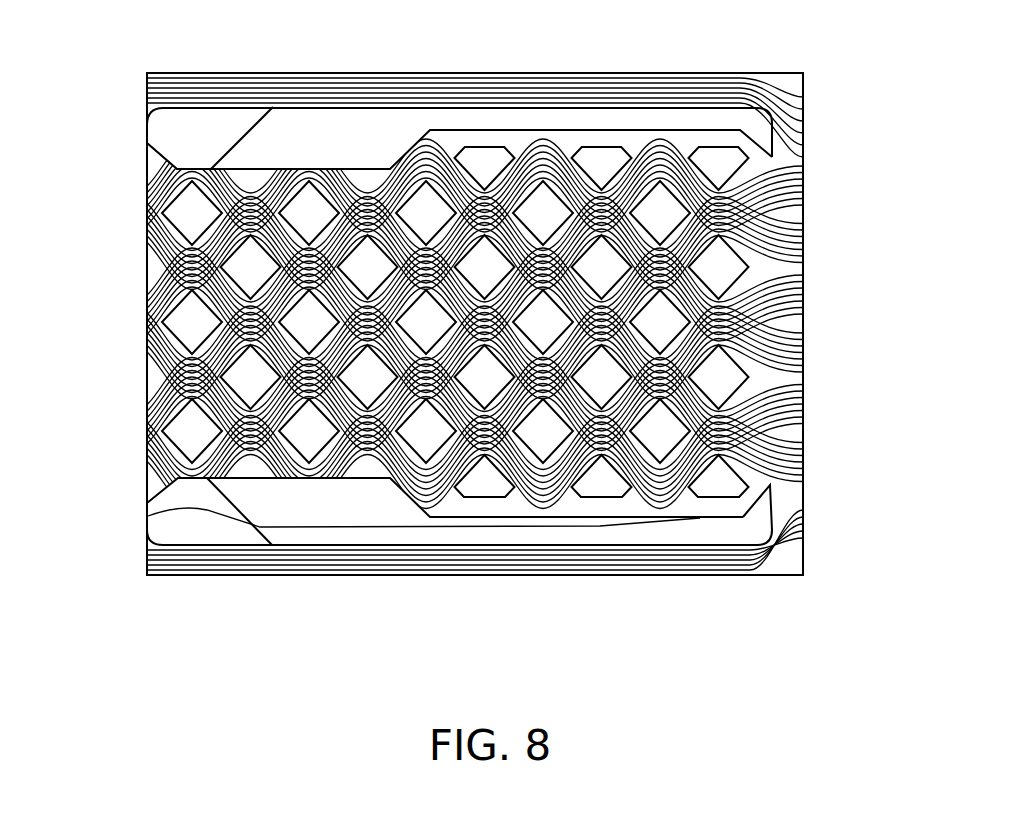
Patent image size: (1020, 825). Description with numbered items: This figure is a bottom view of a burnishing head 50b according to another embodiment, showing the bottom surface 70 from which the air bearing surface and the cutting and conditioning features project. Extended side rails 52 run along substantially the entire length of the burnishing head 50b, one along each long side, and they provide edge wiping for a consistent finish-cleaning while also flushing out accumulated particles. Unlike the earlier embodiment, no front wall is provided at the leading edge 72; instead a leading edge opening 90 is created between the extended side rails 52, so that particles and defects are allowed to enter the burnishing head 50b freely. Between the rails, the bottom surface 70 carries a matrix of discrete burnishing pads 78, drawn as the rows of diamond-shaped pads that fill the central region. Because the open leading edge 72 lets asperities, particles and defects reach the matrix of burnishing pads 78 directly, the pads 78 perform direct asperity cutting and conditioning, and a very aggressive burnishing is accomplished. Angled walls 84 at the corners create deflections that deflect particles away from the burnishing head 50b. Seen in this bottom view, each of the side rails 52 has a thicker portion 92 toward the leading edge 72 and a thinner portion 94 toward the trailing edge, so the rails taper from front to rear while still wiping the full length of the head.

The burnishing head 50b is at (107, 42).
The extended side rails 52 is at (633, 95).
The bottom surface 70 is at (754, 566).
The leading edge 72 is at (142, 387).
The burnishing pads 78 is at (645, 320).
The angled walls 84 is at (250, 127).
The leading edge opening 90 is at (157, 274).
The thicker portion 92 is at (343, 122).
The thinner portion 94 is at (560, 117).